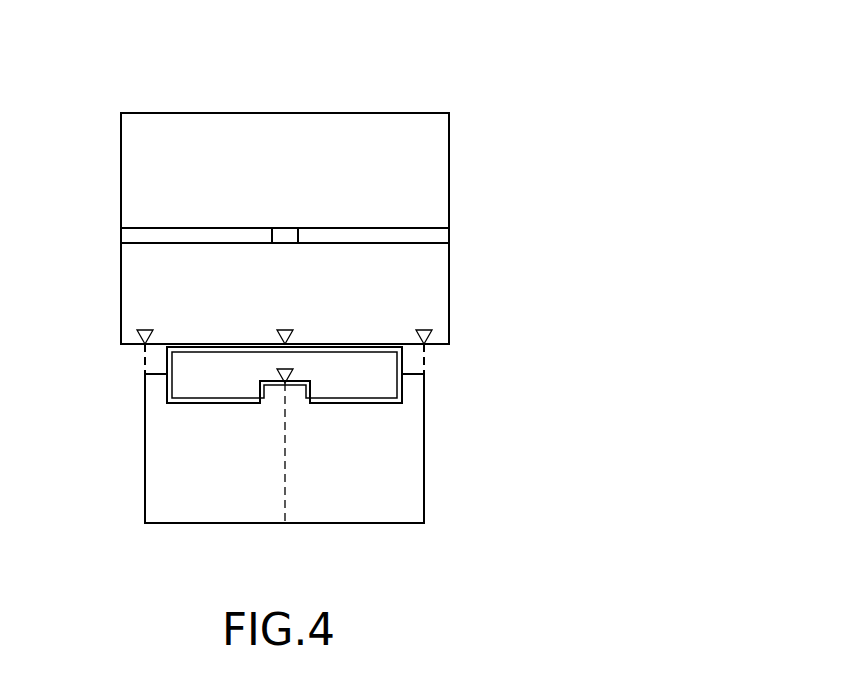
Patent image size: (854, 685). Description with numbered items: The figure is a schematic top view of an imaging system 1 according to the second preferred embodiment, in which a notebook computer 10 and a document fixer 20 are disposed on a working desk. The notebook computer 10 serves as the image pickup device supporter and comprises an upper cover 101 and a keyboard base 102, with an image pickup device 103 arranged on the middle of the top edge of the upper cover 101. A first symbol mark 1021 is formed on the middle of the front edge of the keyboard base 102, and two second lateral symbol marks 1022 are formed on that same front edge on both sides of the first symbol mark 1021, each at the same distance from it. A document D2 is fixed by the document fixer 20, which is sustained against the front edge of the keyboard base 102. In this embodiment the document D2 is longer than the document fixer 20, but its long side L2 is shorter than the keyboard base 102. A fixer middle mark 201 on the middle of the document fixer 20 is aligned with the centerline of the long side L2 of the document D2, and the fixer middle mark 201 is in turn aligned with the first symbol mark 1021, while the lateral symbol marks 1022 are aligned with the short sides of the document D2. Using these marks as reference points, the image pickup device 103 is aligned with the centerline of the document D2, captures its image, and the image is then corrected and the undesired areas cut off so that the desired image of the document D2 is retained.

The imaging system 1 is at (422, 47).
The notebook computer 10 is at (225, 119).
The upper cover 101 is at (431, 173).
The keyboard base 102 is at (431, 315).
The image pickup device 103 is at (286, 237).
The first symbol mark 1021 is at (285, 332).
The second lateral symbol marks 1022 is at (140, 336).
The document fixer 20 is at (190, 377).
The fixer middle mark 201 is at (285, 370).
The long side L2 is at (236, 523).
The document D2 is at (367, 508).